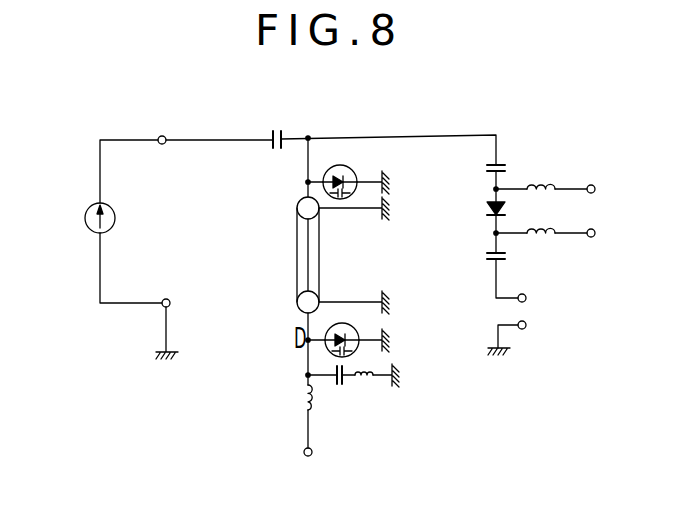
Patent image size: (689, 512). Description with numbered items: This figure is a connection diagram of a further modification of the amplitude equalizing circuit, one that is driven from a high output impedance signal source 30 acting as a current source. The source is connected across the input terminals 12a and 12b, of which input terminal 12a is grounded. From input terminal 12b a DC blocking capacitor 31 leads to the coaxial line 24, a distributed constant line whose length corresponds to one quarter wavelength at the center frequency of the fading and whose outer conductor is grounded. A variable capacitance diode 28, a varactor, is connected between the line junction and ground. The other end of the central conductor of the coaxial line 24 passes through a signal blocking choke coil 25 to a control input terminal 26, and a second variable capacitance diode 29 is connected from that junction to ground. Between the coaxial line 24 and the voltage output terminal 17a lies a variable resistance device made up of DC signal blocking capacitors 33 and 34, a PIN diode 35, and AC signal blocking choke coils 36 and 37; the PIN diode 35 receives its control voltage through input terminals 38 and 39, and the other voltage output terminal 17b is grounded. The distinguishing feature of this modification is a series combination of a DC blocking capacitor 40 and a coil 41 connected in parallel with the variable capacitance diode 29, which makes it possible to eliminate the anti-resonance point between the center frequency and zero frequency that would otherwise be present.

The input terminal 12a is at (179, 322).
The input terminal 12b is at (165, 125).
The voltage output terminal 17a is at (538, 300).
The voltage output terminal 17b is at (523, 333).
The coaxial line 24 is at (320, 250).
The signal blocking choke coil 25 is at (297, 401).
The control input terminal 26 is at (308, 468).
The variable capacitance diode 28 is at (352, 152).
The variable capacitance diode 29 is at (352, 321).
The high output impedance signal source 30 is at (88, 219).
The DC blocking capacitor 31 is at (276, 122).
The DC signal blocking capacitor 33 is at (484, 172).
The DC signal blocking capacitor 34 is at (485, 257).
The PIN diode 35 is at (463, 212).
The AC signal blocking choke coil 36 is at (540, 171).
The AC signal blocking choke coil 37 is at (540, 216).
The input terminal 38 is at (602, 192).
The input terminal 39 is at (602, 237).
The DC blocking capacitor 40 is at (342, 391).
The coil 41 is at (364, 391).